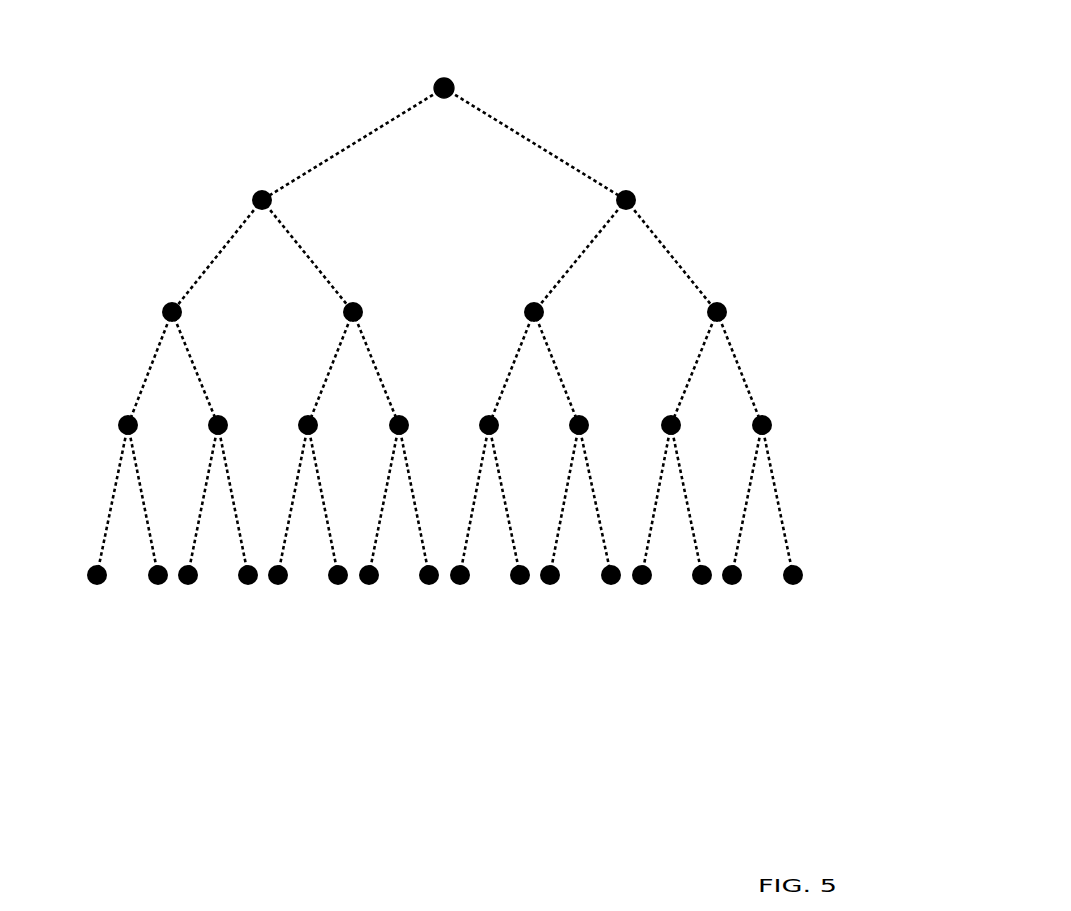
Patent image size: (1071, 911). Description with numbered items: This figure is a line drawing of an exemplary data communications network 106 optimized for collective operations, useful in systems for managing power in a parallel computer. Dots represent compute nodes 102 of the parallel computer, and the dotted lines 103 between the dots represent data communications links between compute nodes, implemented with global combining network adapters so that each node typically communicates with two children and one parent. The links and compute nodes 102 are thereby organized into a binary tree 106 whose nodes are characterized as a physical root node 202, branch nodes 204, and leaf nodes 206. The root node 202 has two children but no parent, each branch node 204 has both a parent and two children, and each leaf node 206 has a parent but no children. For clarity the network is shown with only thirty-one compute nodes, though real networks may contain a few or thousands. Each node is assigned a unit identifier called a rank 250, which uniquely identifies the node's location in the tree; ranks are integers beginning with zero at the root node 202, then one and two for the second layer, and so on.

The data communications network optimized for collective operations 106 is at (483, 423).
The dotted lines 103 is at (363, 137).
The physical root node 202 is at (585, 63).
The branch nodes 204 is at (813, 148).
The leaf nodes 206 is at (815, 612).
The compute nodes 102 is at (518, 585).
The rank 250 is at (572, 211).